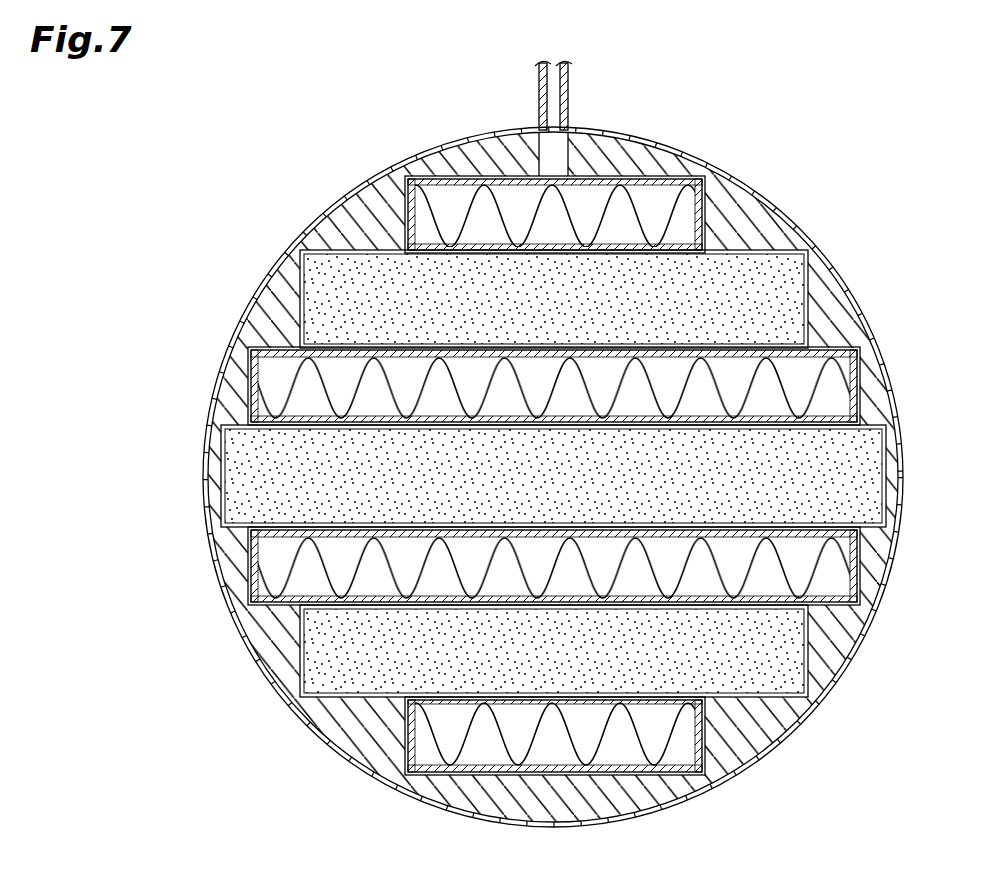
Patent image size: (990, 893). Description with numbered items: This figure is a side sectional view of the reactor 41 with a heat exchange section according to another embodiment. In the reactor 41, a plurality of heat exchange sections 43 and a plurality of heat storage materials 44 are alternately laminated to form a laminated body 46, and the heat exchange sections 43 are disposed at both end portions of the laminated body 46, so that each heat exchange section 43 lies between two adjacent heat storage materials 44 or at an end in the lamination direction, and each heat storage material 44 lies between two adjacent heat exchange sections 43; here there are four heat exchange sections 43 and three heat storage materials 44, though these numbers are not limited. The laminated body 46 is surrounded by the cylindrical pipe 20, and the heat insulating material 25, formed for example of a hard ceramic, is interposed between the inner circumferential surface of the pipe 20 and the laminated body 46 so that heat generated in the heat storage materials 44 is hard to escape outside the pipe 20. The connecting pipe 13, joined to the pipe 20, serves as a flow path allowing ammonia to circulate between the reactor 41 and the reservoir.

The connecting pipe 13 is at (541, 84).
The pipe 20 is at (383, 168).
The heat insulating material 25 is at (352, 224).
The reactor with a heat exchange section 41 is at (596, 444).
The heat exchange section 43 is at (730, 208).
The heat storage material 44 is at (787, 292).
The laminated body 46 is at (760, 178).